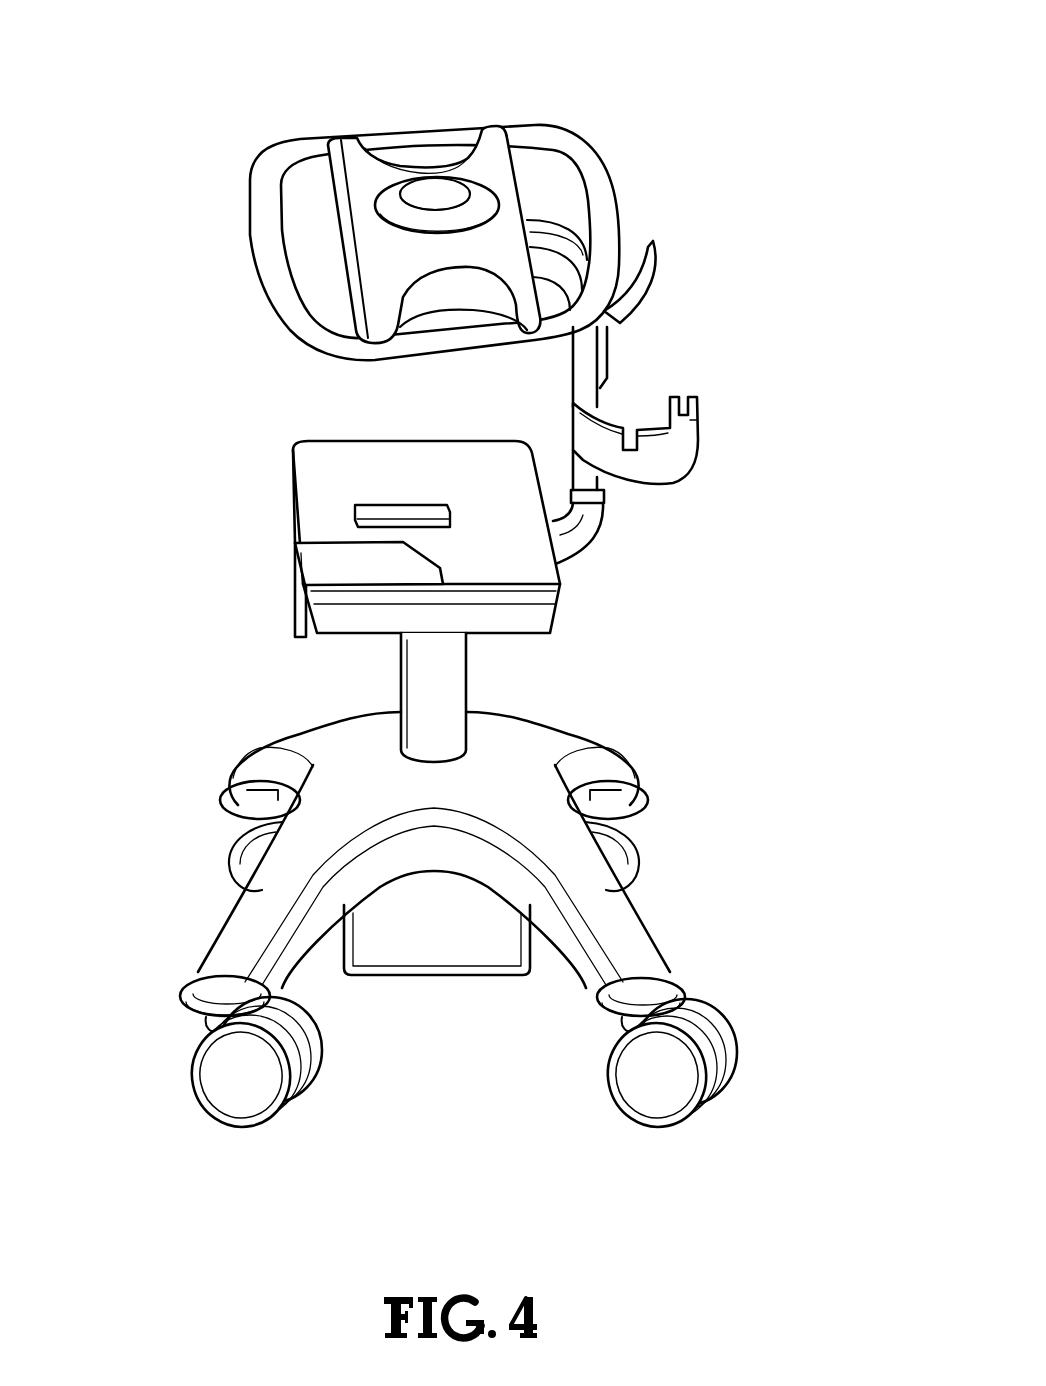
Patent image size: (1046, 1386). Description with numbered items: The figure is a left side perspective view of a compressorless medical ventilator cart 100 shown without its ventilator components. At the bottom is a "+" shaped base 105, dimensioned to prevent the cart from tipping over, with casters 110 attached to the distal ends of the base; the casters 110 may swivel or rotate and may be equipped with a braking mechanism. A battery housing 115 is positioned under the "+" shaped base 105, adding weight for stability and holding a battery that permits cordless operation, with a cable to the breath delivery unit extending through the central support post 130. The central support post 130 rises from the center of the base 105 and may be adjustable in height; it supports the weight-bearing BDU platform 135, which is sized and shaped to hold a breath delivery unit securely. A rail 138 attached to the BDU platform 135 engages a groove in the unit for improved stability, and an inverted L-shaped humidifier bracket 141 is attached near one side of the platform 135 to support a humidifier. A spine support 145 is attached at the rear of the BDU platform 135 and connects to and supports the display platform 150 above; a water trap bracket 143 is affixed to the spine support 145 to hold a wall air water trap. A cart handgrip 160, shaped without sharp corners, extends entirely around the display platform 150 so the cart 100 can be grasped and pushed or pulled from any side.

The compressorless medical ventilator cart 100 is at (780, 118).
The "+" shaped base 105 is at (359, 758).
The casters 110 is at (233, 1093).
The battery housing 115 is at (437, 942).
The central support post 130 is at (435, 693).
The BDU platform 135 is at (310, 470).
The rail 138 is at (413, 507).
The humidifier bracket 141 is at (305, 613).
The water trap bracket 143 is at (687, 450).
The spine support 145 is at (583, 527).
The display platform 150 is at (497, 253).
The cart handgrip 160 is at (267, 237).